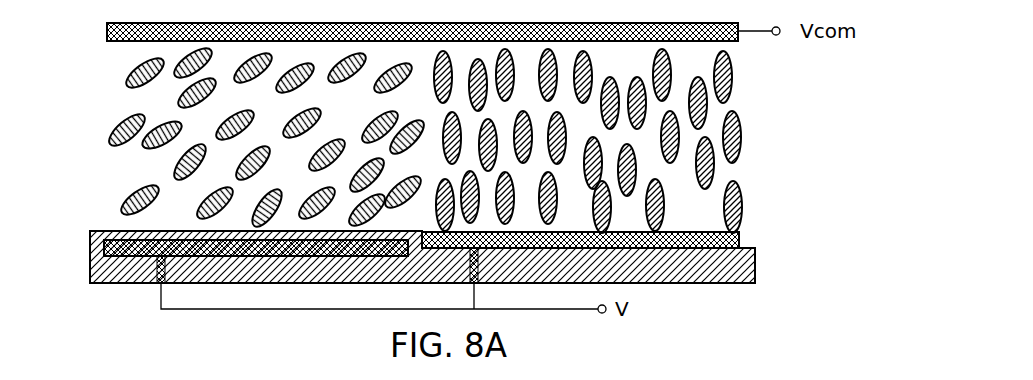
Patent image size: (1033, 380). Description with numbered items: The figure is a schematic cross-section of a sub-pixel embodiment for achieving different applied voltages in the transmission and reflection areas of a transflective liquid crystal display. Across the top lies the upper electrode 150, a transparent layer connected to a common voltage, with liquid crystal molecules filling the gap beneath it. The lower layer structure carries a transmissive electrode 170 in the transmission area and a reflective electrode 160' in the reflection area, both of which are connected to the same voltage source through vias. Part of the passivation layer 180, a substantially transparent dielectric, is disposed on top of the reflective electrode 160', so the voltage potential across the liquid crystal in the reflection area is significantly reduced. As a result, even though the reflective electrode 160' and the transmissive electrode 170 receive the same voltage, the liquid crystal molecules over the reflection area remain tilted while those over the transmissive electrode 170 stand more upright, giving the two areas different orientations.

The upper electrode 150 is at (107, 35).
The reflective electrode 160' is at (400, 278).
The transmissive electrode 170 is at (740, 245).
The passivation layer 180 is at (90, 272).